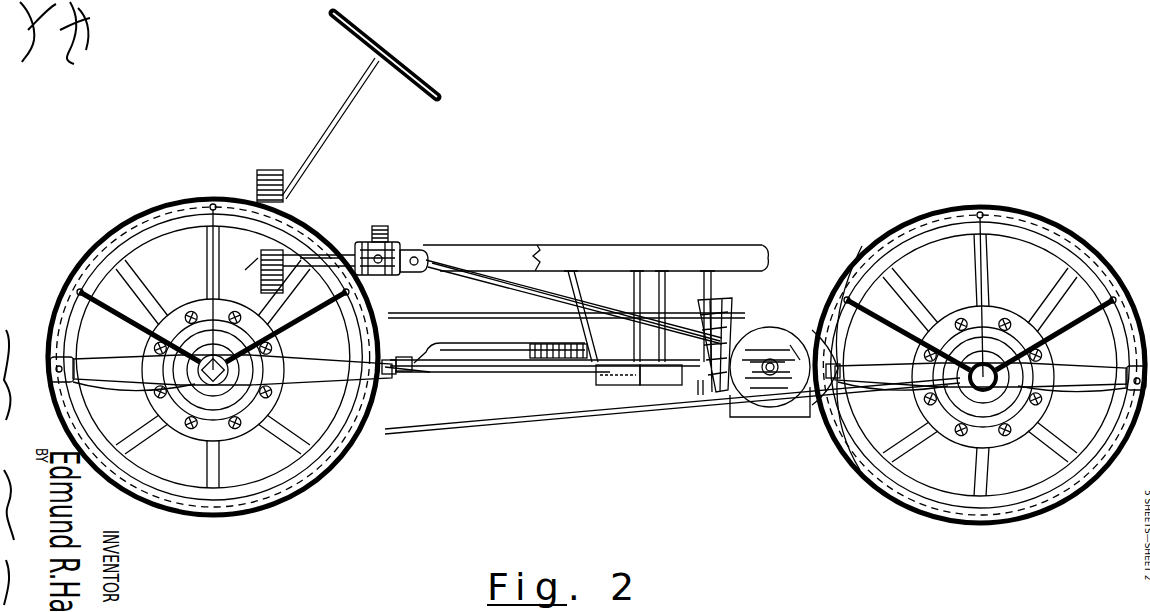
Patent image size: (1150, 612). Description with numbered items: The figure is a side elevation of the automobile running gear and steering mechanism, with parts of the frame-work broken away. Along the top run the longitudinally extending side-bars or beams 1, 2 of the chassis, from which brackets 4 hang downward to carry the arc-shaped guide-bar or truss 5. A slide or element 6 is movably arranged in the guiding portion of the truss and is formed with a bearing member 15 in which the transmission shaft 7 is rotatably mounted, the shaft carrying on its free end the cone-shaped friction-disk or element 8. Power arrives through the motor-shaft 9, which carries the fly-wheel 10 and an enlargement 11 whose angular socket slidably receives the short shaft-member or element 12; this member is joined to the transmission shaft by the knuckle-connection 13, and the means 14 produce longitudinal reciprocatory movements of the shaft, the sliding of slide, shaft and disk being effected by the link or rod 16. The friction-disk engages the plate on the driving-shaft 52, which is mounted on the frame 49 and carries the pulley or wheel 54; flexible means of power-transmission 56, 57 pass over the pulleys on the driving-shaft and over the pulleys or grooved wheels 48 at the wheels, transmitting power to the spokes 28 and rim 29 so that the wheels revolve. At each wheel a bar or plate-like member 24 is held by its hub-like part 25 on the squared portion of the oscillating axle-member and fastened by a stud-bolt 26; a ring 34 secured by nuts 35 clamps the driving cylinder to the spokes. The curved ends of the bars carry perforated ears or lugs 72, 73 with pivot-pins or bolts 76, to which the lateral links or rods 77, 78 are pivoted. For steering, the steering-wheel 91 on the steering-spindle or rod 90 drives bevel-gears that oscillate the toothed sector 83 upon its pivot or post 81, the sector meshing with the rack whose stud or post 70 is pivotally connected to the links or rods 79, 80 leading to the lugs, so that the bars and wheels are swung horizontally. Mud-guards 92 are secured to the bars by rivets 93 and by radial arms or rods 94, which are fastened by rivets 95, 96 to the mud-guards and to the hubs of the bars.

The side-bar or beam 1 is at (500, 252).
The side-bar or beam 2 is at (618, 252).
The bracket 4 is at (690, 291).
The arc-shaped guide-bar or truss 5 is at (615, 388).
The slide or element 6 is at (660, 388).
The transmission shaft 7 is at (478, 278).
The friction-disk or element 8 is at (732, 312).
The power-driven or motor-shaft 9 is at (244, 274).
The fly-wheel 10 is at (258, 170).
The enlargement 11 is at (300, 262).
The short shaft-member or element 12 is at (358, 245).
The knuckle-connection 13 is at (422, 252).
The means for producing longitudinal reciprocatory movements 14 is at (388, 236).
The bearing member 15 is at (700, 397).
The link or rod 16 is at (512, 367).
The bar or plate-like member 24 is at (68, 394).
The hub-like part 25 is at (158, 394).
The stud-bolt 26 is at (200, 420).
The spokes 28 is at (206, 280).
The rim 29 is at (138, 483).
The ring 34 is at (243, 420).
The nuts 35 is at (165, 410).
The pulley or grooved wheel 48 is at (300, 392).
The frame 49 is at (475, 428).
The driving-shaft 52 is at (792, 343).
The pulley or wheel 54 is at (760, 340).
The flexible means of power-transmission 56 is at (500, 282).
The flexible means of power-transmission 57 is at (855, 270).
The stud or post 70 is at (560, 320).
The perforated ear or lug 72 is at (410, 356).
The perforated ear or lug 73 is at (818, 330).
The pivot-pin or bolt 76 is at (390, 358).
The link or rod 77 is at (412, 375).
The link or rod 78 is at (782, 357).
The link or rod 79 is at (450, 352).
The link or rod 80 is at (772, 327).
The pivot or post 81 is at (490, 350).
The toothed sector 83 is at (555, 360).
The steering-spindle or rod 90 is at (343, 102).
The steering-wheel 91 is at (398, 52).
The mud-guard 92 is at (150, 226).
The rivets 93 is at (52, 382).
The radial arms or rods 94 is at (205, 265).
The rivets 95 is at (77, 290).
The rivets 96 is at (195, 368).